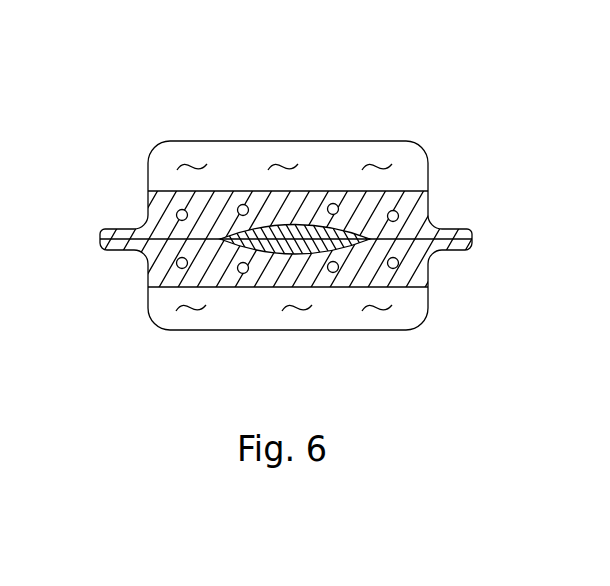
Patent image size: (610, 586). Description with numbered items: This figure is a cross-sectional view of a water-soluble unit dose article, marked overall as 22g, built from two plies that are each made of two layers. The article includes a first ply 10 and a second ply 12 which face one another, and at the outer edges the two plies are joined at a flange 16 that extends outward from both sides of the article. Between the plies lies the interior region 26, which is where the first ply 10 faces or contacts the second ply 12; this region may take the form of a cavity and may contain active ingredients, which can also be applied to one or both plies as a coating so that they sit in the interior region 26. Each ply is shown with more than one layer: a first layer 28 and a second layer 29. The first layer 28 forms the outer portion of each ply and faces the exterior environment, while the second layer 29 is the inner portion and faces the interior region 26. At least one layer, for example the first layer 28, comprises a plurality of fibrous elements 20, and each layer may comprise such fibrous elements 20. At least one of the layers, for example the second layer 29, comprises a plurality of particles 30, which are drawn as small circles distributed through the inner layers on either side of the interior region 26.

The heat exchanger tube assembly 22g is at (460, 118).
The first ply 10 is at (440, 143).
The second ply 12 is at (440, 262).
The flange 16 is at (473, 239).
The fibrous elements 20 is at (380, 156).
The interior region 26 is at (268, 225).
The first layer 28 is at (155, 148).
The second layer 29 is at (147, 203).
The particles 30 is at (334, 204).